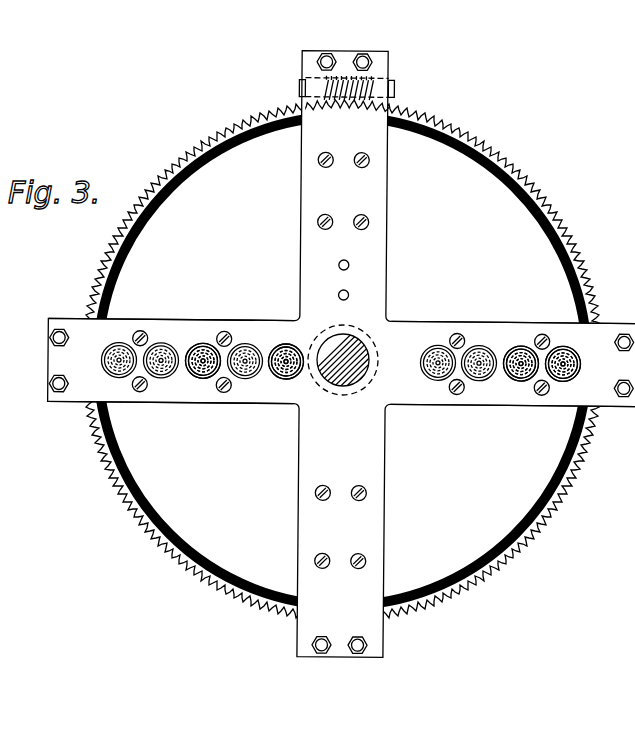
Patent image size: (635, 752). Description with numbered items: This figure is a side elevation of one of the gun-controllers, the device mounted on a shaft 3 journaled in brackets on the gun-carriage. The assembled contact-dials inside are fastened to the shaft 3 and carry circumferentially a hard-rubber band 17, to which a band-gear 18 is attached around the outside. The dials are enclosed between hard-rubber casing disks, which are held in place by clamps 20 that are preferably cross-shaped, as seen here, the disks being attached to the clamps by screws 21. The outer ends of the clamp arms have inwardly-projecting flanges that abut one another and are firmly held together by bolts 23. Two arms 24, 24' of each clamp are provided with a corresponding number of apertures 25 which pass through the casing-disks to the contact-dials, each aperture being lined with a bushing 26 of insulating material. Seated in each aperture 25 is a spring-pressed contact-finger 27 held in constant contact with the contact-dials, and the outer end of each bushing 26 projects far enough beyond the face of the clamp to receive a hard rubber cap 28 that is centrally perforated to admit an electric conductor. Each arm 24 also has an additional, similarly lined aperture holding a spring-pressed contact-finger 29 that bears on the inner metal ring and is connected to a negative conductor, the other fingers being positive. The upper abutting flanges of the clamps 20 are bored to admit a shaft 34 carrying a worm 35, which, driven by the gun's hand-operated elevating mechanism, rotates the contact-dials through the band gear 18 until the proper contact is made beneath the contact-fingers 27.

The shaft 3 is at (343, 386).
The hard-rubber band 17 is at (428, 126).
The band-gear 18 is at (490, 154).
The clamps 20 is at (389, 282).
The screws 21 is at (387, 222).
The bolts 23 is at (315, 62).
The arm 24 is at (171, 347).
The arm 24' is at (513, 352).
The apertures 25 is at (208, 372).
The bushing 26 is at (163, 366).
The spring-pressed contact-finger 27 is at (203, 354).
The hard rubber cap 28 is at (120, 366).
The spring-pressed contact-finger 29 is at (286, 354).
The shaft 34 is at (298, 92).
The worm 35 is at (303, 78).